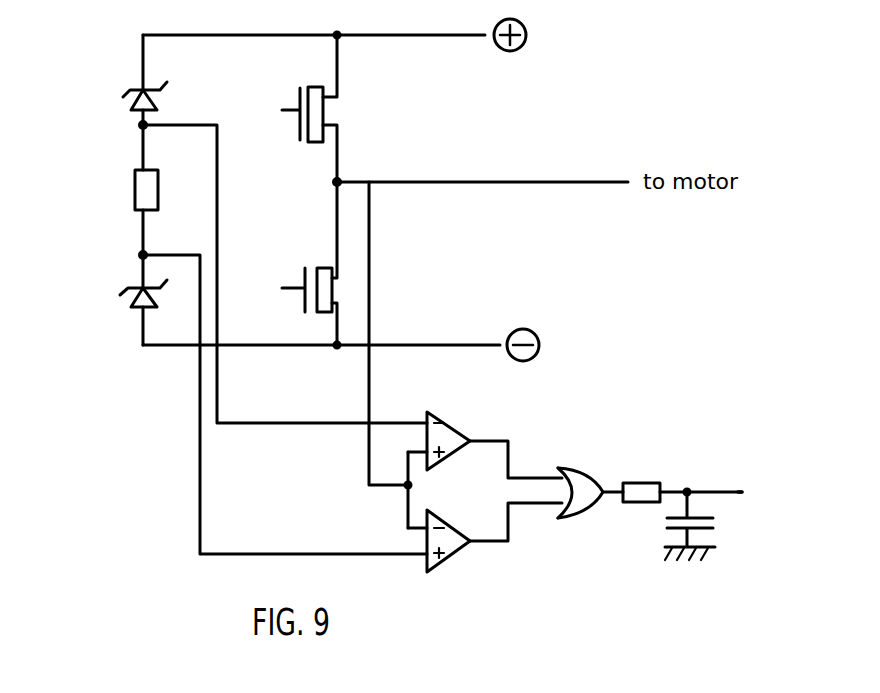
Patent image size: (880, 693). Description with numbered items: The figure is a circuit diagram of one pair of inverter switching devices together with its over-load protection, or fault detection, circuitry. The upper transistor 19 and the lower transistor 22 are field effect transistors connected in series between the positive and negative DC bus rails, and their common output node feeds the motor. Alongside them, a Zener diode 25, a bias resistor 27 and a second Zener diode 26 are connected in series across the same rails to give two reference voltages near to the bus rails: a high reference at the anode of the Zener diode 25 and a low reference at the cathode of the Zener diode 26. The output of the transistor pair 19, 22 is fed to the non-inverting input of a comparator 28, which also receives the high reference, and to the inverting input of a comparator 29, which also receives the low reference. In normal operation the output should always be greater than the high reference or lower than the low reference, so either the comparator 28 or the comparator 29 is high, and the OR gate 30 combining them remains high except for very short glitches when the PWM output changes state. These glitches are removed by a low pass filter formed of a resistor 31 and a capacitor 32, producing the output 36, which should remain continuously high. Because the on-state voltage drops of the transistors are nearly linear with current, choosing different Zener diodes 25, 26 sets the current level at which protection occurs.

The transistor 19 is at (349, 108).
The transistor 22 is at (354, 263).
The Zener diode 25 is at (109, 101).
The Zener diode 26 is at (109, 296).
The bias resistor 27 is at (105, 191).
The comparator 28 is at (494, 437).
The comparator 29 is at (494, 550).
The OR gate 30 is at (590, 507).
The resistor 31 is at (681, 476).
The capacitor 32 is at (717, 524).
The output 36 is at (749, 487).